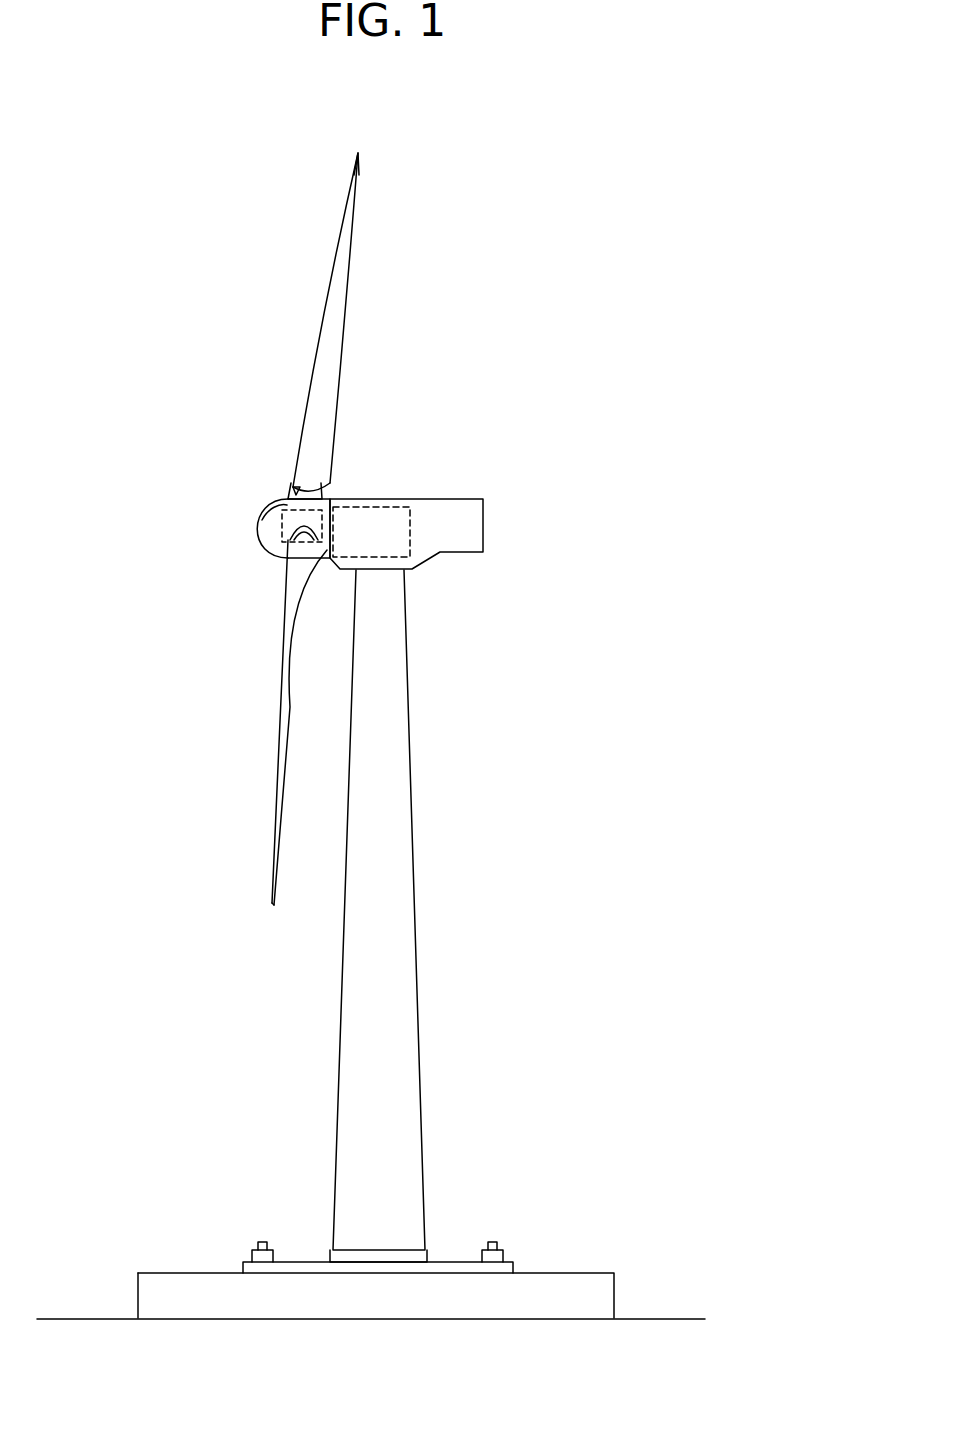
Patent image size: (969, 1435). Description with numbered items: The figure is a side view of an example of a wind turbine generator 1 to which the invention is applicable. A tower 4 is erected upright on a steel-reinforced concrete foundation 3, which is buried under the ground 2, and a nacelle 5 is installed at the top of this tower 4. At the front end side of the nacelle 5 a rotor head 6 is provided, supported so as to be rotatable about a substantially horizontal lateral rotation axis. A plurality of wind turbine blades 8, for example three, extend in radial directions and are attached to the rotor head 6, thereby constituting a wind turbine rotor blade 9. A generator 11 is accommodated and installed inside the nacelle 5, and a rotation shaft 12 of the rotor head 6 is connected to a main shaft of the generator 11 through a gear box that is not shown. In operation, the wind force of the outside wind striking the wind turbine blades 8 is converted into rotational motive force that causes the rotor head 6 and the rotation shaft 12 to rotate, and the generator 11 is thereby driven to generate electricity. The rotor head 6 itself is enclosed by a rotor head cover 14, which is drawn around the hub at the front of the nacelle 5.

The wind turbine generator 1 is at (507, 447).
The ground 2 is at (665, 1318).
The foundation 3 is at (573, 1272).
The tower 4 is at (410, 757).
The nacelle 5 is at (383, 497).
The rotor head 6 is at (270, 525).
The wind turbine blade 8 is at (335, 262).
The wind turbine rotor blade 9 is at (363, 182).
The generator 11 is at (412, 541).
The rotation shaft 12 is at (326, 560).
The rotor head cover 14 is at (258, 540).